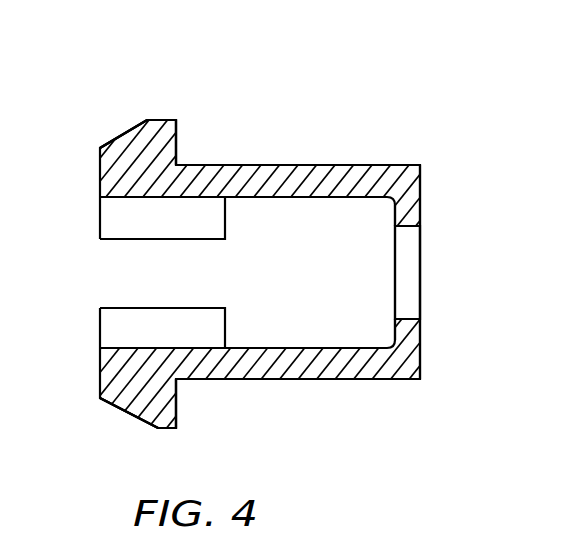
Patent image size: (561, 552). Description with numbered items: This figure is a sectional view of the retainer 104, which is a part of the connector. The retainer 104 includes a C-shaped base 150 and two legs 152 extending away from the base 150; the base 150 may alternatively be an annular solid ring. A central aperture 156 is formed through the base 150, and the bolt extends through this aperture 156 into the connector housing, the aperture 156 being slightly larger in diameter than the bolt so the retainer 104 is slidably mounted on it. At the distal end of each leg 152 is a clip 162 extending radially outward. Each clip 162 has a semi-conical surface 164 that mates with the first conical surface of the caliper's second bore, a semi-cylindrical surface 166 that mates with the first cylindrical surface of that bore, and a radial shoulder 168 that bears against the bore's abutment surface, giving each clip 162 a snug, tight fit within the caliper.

The retainer 104 is at (298, 115).
The base 150 is at (421, 193).
The legs 152 is at (300, 164).
The central aperture 156 is at (409, 277).
The clip 162 is at (146, 121).
The semi-conical surface 164 is at (117, 136).
The semi-cylindrical surface 166 is at (150, 120).
The radial shoulder 168 is at (180, 145).